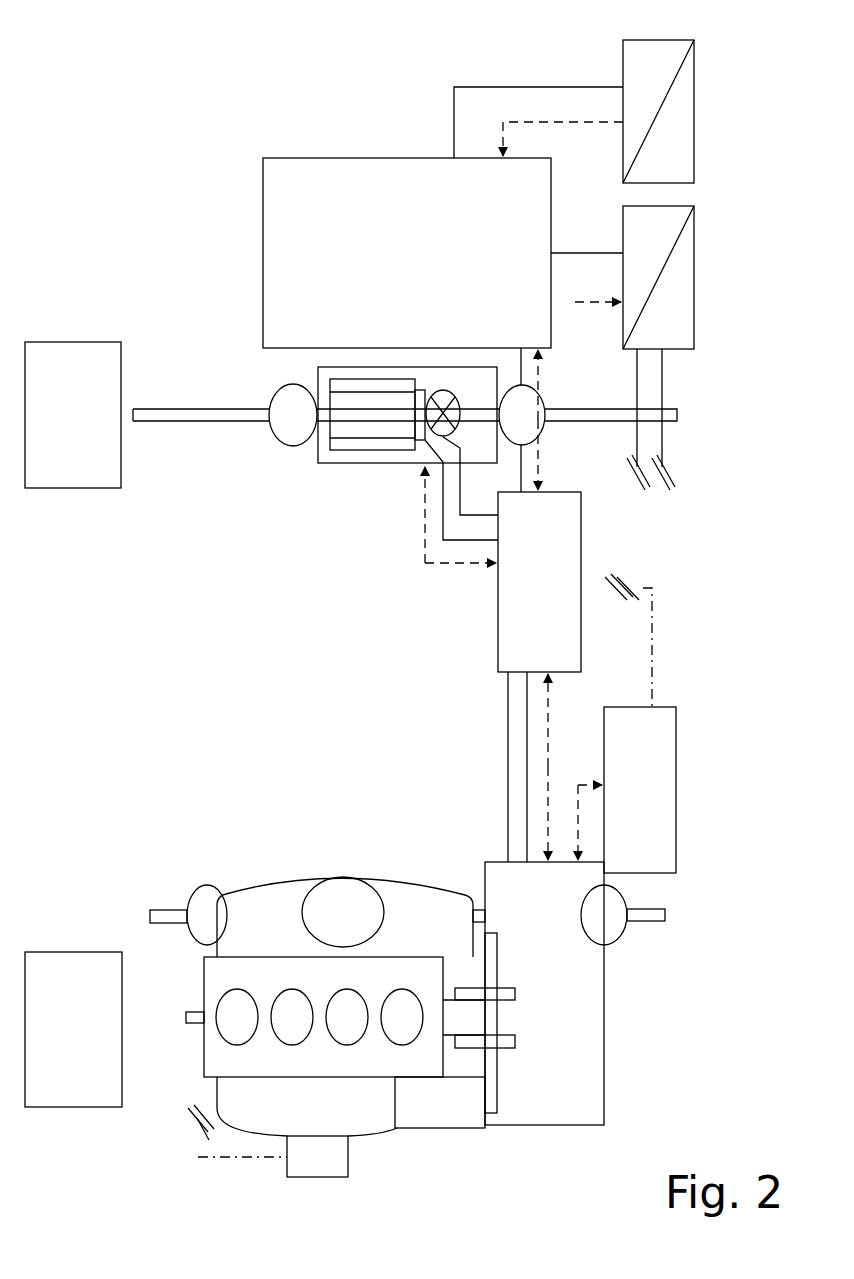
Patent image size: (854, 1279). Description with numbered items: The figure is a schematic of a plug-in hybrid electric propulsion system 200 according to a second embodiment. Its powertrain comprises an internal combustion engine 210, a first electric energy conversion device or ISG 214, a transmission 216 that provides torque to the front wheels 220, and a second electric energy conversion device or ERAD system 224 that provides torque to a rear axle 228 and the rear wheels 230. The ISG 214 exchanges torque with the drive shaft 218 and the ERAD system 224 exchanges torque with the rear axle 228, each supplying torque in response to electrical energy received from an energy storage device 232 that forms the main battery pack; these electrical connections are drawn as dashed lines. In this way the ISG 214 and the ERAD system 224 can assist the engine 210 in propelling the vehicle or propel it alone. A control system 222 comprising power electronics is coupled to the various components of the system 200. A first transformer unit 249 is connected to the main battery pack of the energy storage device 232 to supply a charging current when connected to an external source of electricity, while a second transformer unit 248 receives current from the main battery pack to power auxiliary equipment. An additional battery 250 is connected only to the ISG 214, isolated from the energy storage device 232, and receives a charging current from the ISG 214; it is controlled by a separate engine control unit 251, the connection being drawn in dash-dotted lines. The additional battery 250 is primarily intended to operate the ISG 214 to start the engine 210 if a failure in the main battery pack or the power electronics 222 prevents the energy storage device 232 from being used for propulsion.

The plug-in hybrid electric propulsion system 200 is at (190, 133).
The internal combustion engine 210 is at (358, 1117).
The first electric energy conversion device 214 is at (460, 1067).
The transmission 216 is at (576, 1027).
The drive shaft 218 is at (163, 915).
The front wheels 220 is at (93, 1041).
The control system 222 is at (558, 594).
The second electric energy conversion device 224 is at (370, 457).
The rear axle 228 is at (209, 409).
The rear wheels 230 is at (93, 429).
The energy storage device 232 is at (426, 266).
The second transformer unit 248 is at (668, 325).
The first transformer unit 249 is at (673, 160).
The additional battery 250 is at (660, 783).
The engine control unit 251 is at (309, 1177).